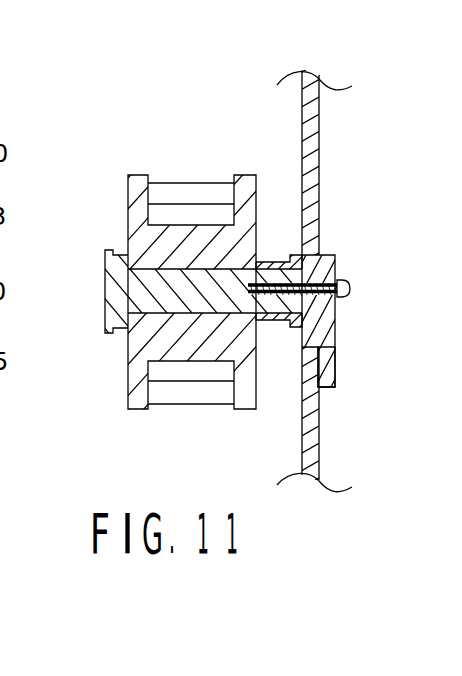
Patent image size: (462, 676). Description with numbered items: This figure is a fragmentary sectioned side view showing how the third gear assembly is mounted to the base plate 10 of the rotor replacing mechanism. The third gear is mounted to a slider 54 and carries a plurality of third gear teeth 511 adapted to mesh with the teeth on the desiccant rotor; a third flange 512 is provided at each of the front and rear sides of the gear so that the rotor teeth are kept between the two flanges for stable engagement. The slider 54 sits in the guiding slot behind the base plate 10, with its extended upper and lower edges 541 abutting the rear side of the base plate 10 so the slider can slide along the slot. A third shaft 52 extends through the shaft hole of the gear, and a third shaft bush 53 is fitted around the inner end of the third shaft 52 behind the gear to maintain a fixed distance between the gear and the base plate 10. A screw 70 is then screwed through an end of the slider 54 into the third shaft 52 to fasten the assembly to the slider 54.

The base plate 10 is at (307, 129).
The third shaft 52 is at (125, 292).
The third shaft bush 53 is at (290, 262).
The slider 54 is at (320, 315).
The extended upper and lower edges 541 is at (333, 366).
The screw 70 is at (351, 285).
The third gear teeth 511 is at (183, 398).
The third flange 512 is at (137, 213).